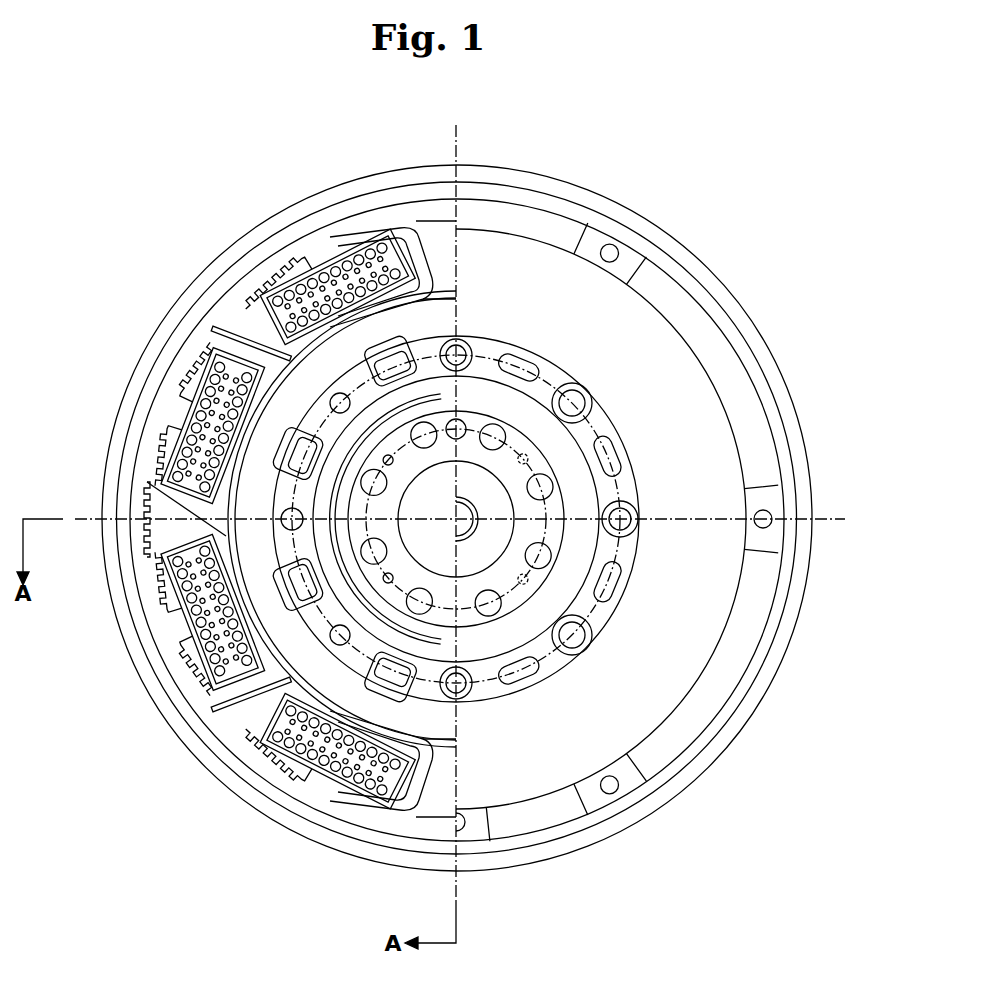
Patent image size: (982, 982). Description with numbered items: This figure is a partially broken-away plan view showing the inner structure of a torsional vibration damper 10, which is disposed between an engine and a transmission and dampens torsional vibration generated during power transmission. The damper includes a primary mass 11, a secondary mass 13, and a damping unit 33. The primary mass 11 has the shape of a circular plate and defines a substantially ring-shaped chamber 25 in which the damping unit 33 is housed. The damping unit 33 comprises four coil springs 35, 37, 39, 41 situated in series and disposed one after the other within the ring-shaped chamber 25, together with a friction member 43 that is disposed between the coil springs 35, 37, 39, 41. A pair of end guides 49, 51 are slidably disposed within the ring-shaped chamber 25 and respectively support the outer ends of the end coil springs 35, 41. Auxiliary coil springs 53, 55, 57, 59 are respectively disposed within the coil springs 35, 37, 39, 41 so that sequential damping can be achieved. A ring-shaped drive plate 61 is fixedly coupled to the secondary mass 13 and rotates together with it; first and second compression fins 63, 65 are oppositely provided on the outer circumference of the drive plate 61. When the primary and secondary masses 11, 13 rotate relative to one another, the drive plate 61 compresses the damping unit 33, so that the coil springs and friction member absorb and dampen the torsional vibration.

The torsional vibration damper 10 is at (674, 202).
The primary mass 11 is at (167, 711).
The secondary mass 13 is at (655, 332).
The ring-shaped chamber 25 is at (180, 638).
The damping unit 33 is at (135, 548).
The coil spring 35 is at (337, 262).
The coil spring 37 is at (195, 404).
The coil spring 39 is at (192, 621).
The coil spring 41 is at (325, 685).
The friction member 43 is at (226, 296).
The end guide 49 is at (378, 227).
The end guide 51 is at (379, 814).
The auxiliary coil spring 53 is at (313, 278).
The auxiliary coil spring 55 is at (190, 424).
The auxiliary coil spring 57 is at (180, 631).
The auxiliary coil spring 59 is at (330, 786).
The drive plate 61 is at (280, 758).
The first compression fin 63 is at (433, 225).
The second compression fin 65 is at (448, 821).